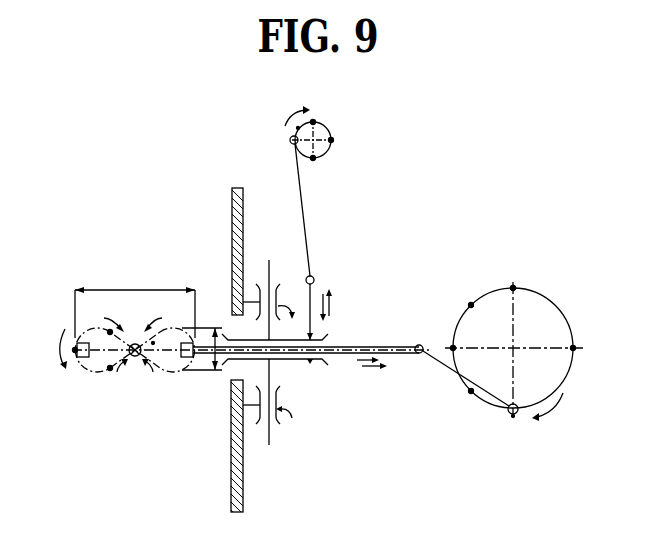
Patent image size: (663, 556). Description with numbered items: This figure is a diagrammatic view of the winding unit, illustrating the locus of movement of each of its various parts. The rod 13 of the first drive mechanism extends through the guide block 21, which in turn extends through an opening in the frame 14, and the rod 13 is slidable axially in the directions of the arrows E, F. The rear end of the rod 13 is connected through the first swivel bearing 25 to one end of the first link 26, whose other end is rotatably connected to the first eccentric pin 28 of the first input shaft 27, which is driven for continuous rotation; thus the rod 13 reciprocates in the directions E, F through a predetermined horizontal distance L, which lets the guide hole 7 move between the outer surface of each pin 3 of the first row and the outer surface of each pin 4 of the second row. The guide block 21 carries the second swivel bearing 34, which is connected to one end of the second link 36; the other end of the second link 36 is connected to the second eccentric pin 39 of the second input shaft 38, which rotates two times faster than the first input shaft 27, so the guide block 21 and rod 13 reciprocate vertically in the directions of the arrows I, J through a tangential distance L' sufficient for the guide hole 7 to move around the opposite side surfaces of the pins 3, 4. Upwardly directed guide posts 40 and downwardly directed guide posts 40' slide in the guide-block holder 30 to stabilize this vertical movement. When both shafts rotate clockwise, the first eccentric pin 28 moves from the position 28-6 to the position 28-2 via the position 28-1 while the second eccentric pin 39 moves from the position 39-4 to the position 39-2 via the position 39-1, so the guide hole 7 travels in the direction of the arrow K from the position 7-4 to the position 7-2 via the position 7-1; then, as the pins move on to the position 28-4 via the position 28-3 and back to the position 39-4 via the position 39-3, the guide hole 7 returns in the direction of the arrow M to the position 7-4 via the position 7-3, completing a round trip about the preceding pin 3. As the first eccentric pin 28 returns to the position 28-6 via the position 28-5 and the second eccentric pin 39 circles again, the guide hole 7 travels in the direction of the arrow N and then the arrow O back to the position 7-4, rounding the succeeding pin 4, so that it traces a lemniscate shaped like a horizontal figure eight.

The pin 3 is at (86, 358).
The pin 4 is at (187, 358).
The guide hole 7 is at (135, 357).
The position 7-1 is at (107, 331).
The position 7-2 is at (76, 353).
The position 7-3 is at (109, 371).
The position 7-4 is at (138, 343).
The rod 13 is at (360, 346).
The frame 14 is at (232, 192).
The guide block 21 is at (302, 360).
The first swivel bearing 25 is at (416, 346).
The first link 26 is at (444, 364).
The first input shaft 27 is at (559, 301).
The first eccentric pin 28 is at (505, 426).
The position 28-1 is at (470, 395).
The position 28-2 is at (452, 346).
The position 28-3 is at (472, 303).
The position 28-4 is at (514, 285).
The position 28-5 is at (574, 346).
The position 28-6 is at (516, 415).
The guide-block holder 30 is at (295, 373).
The second swivel bearing 34 is at (314, 279).
The second link 36 is at (300, 178).
The second input shaft 38 is at (331, 131).
The second eccentric pin 39 is at (290, 144).
The position 39-1 is at (317, 121).
The position 39-2 is at (334, 142).
The position 39-3 is at (316, 159).
The position 39-4 is at (291, 134).
The upwardly directed guide post 40 is at (276, 285).
The downwardly directed guide post 40' is at (288, 418).
The horizontal distance L is at (135, 297).
The tangential distance L' is at (204, 364).
The arrow K is at (109, 315).
The arrow N is at (158, 315).
The arrow M is at (117, 380).
The arrow O is at (157, 380).
The arrow J is at (334, 299).
The arrow I is at (325, 318).
The arrow F is at (352, 363).
The arrow E is at (384, 368).